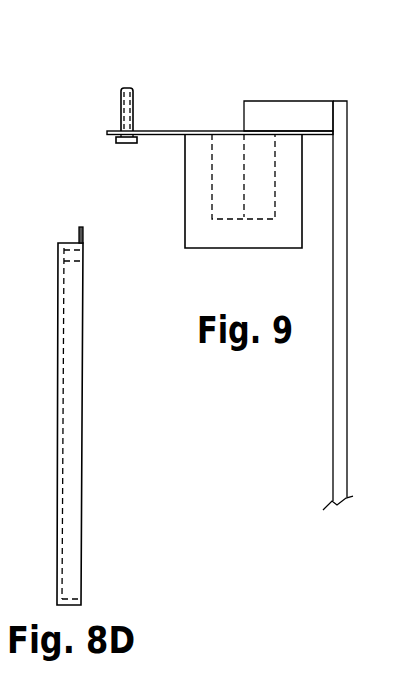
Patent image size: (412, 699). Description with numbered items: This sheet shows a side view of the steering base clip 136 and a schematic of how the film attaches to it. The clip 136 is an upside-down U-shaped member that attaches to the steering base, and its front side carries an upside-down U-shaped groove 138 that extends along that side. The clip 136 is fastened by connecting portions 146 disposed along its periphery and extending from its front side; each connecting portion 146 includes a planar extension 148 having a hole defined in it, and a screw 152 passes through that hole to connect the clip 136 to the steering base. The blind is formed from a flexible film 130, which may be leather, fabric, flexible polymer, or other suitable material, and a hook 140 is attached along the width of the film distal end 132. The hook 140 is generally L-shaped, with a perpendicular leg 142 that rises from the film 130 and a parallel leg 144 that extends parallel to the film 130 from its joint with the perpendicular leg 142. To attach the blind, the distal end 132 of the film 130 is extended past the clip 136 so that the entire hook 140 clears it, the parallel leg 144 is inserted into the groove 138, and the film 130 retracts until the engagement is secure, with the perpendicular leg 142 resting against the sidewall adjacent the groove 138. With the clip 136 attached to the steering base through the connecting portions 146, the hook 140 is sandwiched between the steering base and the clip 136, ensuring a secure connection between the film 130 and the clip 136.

In FIG. 9, the flexible film 130 is at (339, 275).
In FIG. 9, the distal end 132 is at (341, 118).
In FIG. 8D, the clip 136 is at (36, 211).
In FIG. 9, the groove 138 is at (200, 104).
In FIG. 9, the hook 140 is at (285, 115).
In FIG. 9, the perpendicular leg 142 is at (310, 120).
In FIG. 9, the parallel leg 144 is at (260, 152).
In FIG. 8D, the connecting portion 146 is at (62, 210).
In FIG. 9, the connecting portion 146 is at (148, 76).
In FIG. 9, the planar extension 148 is at (110, 131).
In FIG. 9, the screw 152 is at (128, 143).